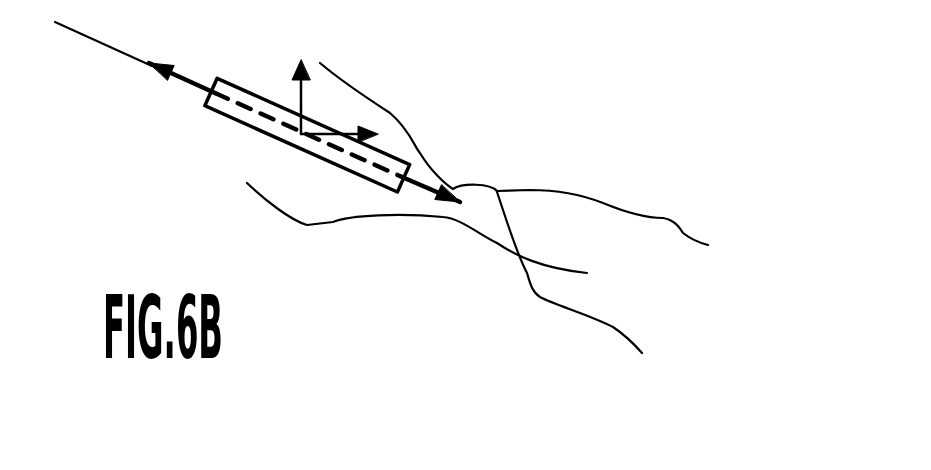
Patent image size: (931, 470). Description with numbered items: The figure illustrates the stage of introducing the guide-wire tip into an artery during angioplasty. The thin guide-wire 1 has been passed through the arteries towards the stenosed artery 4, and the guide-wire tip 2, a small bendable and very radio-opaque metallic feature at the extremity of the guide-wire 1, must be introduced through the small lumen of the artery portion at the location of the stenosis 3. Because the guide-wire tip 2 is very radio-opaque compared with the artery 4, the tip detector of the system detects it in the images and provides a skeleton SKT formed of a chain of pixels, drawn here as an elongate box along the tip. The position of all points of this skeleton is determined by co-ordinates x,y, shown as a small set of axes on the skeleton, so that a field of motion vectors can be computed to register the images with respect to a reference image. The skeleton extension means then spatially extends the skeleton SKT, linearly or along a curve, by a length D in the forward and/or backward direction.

The guide-wire 1 is at (126, 57).
The guide-wire tip 2 is at (380, 145).
The stenosis 3 is at (445, 223).
The artery 4 is at (665, 213).
The skeleton SKT is at (248, 100).
The co-ordinates x,y is at (296, 137).
The extension length D is at (617, 272).